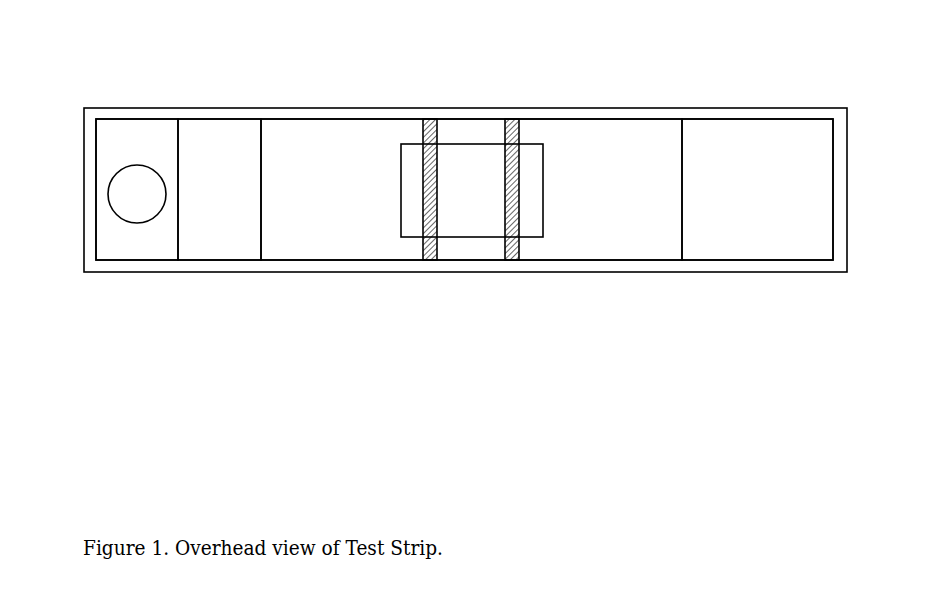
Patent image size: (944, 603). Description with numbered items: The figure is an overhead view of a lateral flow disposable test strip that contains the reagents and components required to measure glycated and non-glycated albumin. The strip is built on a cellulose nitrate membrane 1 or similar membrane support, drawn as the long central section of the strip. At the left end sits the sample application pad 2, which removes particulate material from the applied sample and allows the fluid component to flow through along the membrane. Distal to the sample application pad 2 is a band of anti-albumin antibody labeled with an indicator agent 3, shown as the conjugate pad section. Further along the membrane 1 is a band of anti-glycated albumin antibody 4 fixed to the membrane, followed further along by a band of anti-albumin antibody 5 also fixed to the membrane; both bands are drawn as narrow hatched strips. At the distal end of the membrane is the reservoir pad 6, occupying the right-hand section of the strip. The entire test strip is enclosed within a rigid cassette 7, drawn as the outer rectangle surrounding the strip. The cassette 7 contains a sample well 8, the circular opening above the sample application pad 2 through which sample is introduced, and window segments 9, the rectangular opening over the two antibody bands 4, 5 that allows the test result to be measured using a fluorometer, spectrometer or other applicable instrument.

The cellulose nitrate membrane 1 is at (342, 200).
The sample application pad 2 is at (131, 233).
The band of anti-albumin antibody labeled with an indicator agent 3 is at (224, 223).
The band of anti-glycated albumin antibody 4 is at (436, 263).
The band of anti-albumin antibody 5 is at (518, 263).
The reservoir pad 6 is at (776, 238).
The rigid cassette 7 is at (237, 105).
The sample well 8 is at (131, 187).
The window segments 9 is at (471, 163).